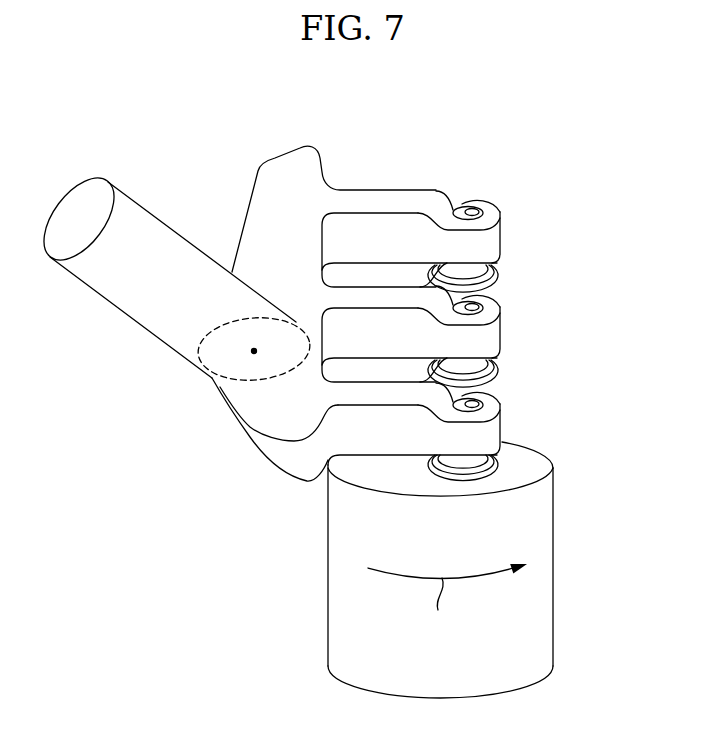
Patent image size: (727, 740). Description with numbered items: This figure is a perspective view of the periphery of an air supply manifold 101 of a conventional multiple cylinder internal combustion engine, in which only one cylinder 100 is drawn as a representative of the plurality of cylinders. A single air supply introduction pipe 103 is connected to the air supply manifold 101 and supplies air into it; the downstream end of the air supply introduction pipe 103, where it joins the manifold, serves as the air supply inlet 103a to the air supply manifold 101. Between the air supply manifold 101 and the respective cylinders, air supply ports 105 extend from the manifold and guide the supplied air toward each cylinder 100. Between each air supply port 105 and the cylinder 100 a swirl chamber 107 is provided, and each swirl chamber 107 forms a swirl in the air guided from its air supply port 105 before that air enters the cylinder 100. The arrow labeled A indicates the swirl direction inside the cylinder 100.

The cylinder 100 is at (553, 525).
The air supply manifold 101 is at (285, 160).
The air supply introduction pipe 103 is at (152, 212).
The air supply inlet 103a is at (256, 354).
The air supply port 105 is at (382, 195).
The swirl chamber 107 is at (502, 230).